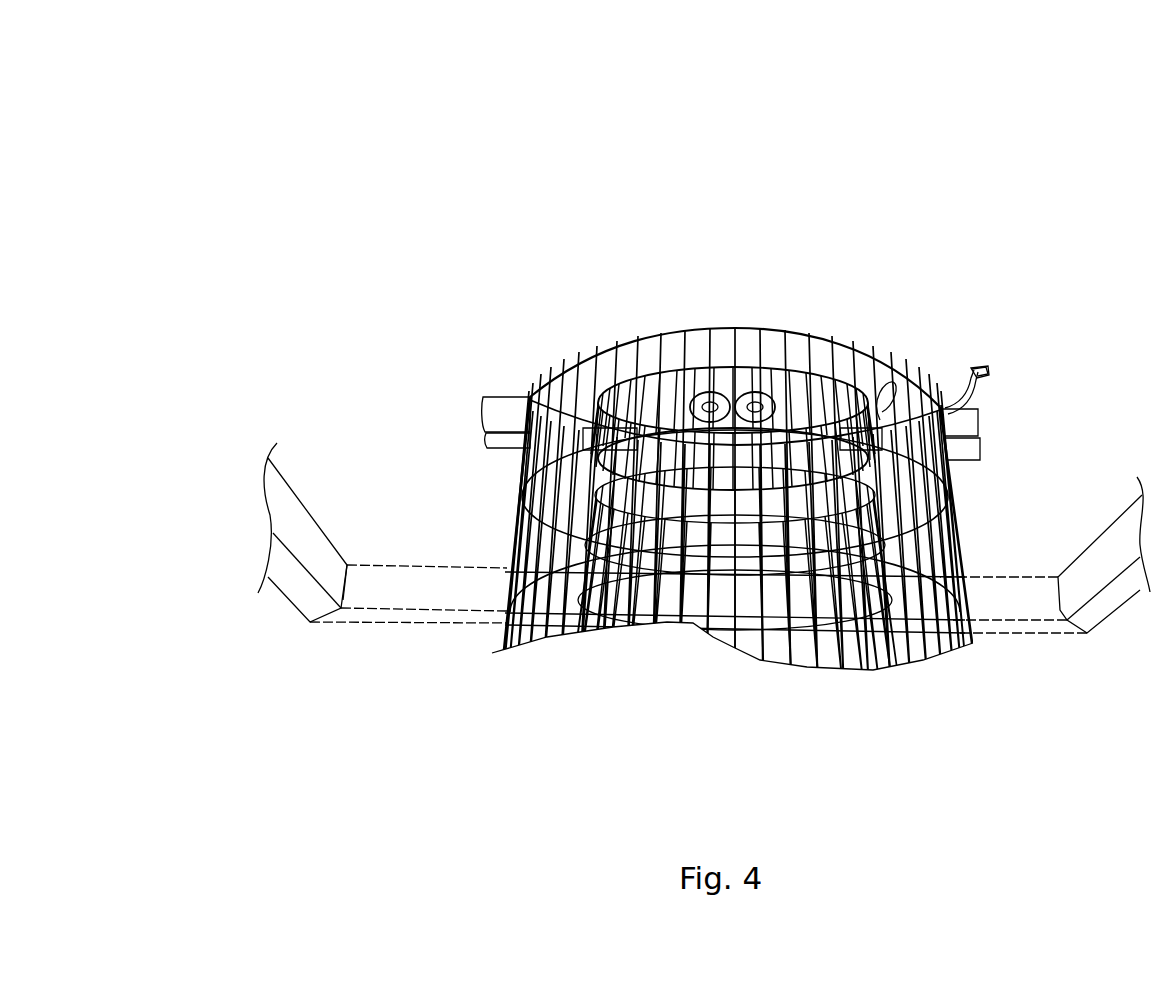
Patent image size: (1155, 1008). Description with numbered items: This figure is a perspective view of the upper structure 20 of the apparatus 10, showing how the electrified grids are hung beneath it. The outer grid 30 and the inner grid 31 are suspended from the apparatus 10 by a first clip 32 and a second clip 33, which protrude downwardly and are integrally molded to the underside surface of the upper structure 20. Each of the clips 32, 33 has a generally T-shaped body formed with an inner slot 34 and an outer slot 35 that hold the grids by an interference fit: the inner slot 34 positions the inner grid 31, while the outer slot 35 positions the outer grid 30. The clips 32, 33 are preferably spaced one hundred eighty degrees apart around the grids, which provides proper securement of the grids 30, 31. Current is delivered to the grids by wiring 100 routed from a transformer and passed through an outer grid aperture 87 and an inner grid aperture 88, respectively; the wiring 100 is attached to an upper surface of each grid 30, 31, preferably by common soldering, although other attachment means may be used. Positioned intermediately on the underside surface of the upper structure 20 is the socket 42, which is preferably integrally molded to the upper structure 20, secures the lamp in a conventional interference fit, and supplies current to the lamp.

The apparatus 10 is at (190, 135).
The upper structure 20 is at (313, 538).
The outer grid 30 is at (953, 503).
The inner grid 31 is at (836, 397).
The first clip 32 is at (514, 404).
The second clip 33 is at (962, 415).
The inner slot 34 is at (592, 431).
The outer slot 35 is at (485, 434).
The socket 42 is at (724, 398).
The outer grid aperture 87 is at (980, 370).
The inner grid aperture 88 is at (882, 392).
The wiring 100 is at (895, 384).